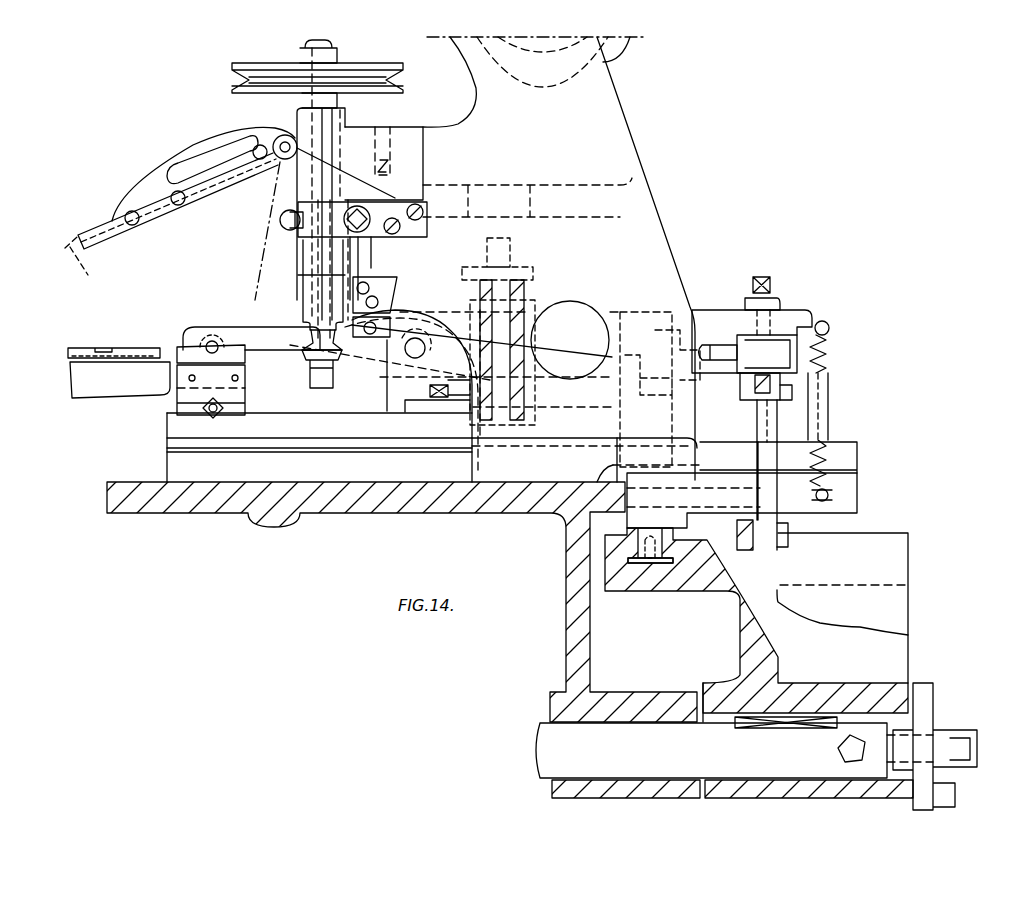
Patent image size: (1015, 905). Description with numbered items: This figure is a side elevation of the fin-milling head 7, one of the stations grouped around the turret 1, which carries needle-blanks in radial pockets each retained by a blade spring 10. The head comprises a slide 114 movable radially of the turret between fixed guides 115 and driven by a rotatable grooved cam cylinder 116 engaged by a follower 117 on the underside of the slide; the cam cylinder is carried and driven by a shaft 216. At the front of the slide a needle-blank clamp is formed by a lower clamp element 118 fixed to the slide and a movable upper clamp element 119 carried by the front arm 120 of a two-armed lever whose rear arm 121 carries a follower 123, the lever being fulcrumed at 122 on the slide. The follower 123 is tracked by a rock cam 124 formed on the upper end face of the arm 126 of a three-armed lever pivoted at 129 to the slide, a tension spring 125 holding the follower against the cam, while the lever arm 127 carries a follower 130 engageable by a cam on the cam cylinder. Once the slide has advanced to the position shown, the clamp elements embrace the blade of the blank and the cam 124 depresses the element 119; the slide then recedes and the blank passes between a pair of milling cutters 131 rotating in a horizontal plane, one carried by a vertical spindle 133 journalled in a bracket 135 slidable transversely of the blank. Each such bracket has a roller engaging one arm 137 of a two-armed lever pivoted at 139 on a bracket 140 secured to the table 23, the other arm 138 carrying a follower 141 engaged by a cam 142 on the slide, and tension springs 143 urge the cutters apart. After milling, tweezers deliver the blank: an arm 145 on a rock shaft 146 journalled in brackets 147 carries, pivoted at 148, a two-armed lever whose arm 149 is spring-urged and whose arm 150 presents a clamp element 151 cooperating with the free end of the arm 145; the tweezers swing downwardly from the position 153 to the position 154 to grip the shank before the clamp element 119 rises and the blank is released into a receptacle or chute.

The turret 1 is at (120, 380).
The fin-milling head 7 is at (693, 287).
The blade spring 10 is at (132, 348).
The table 23 is at (232, 493).
The slide 114 is at (433, 447).
The fixed guides 115 is at (173, 463).
The grooved cam cylinder 116 is at (622, 543).
The follower 117 is at (685, 528).
The lower clamp element 118 is at (243, 368).
The upper clamp element 119 is at (242, 353).
The front arm 120 is at (237, 332).
The rear arm 121 is at (712, 317).
The fulcrum 122 is at (423, 348).
The follower 123 is at (757, 400).
The rock cam 124 is at (770, 405).
The tension spring 125 is at (820, 345).
The lever arm 126 is at (770, 438).
The lever arm 127 is at (783, 547).
The pivot 129 is at (773, 468).
The follower 130 is at (753, 552).
The milling cutters 131 is at (340, 362).
The vertical spindle 133 is at (317, 262).
The bracket 135 is at (306, 281).
The lever arm 137 is at (390, 333).
The lever arm 138 is at (572, 360).
The pivot 139 is at (490, 312).
The bracket 140 is at (648, 230).
The follower 141 is at (540, 388).
The cam 142 is at (462, 412).
The tension springs 143 is at (283, 228).
The arm 145 is at (158, 180).
The rock shaft 146 is at (286, 158).
The brackets 147 is at (358, 135).
The pivot 148 is at (183, 202).
The lever arm 149 is at (212, 186).
The lever arm 150 is at (152, 219).
The clamp element 151 is at (93, 243).
The initial position 153 is at (91, 262).
The lowered position 154 is at (257, 267).
The shaft 216 is at (756, 746).